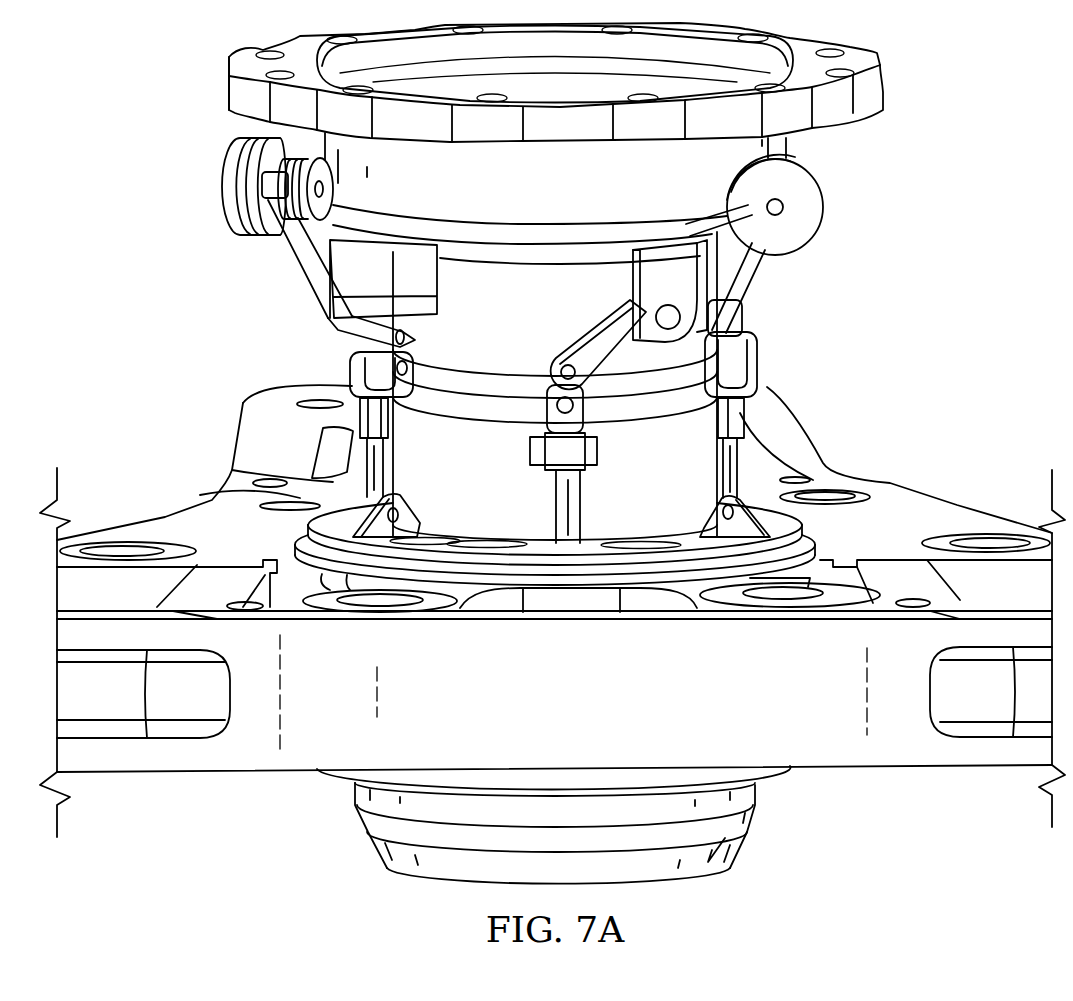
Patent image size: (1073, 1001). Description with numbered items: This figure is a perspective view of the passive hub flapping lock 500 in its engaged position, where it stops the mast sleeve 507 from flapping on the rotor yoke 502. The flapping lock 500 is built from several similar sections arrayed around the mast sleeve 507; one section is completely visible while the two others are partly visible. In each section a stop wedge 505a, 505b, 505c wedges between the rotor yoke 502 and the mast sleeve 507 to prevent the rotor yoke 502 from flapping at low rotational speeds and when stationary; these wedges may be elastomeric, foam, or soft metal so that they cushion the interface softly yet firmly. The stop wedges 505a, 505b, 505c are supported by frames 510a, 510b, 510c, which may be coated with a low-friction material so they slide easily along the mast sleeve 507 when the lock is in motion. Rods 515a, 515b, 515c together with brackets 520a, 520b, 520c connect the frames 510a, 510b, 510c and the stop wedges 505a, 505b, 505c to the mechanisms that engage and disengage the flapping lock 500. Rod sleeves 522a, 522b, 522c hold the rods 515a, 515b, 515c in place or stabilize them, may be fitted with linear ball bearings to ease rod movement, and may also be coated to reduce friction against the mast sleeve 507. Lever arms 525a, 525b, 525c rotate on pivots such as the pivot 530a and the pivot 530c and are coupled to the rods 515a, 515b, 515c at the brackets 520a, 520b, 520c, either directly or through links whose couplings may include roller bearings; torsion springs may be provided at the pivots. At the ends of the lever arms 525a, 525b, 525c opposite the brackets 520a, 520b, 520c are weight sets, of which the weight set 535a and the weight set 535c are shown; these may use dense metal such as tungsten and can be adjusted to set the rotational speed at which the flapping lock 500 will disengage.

The passive hub flapping lock 500 is at (904, 284).
The rotor yoke 502 is at (990, 518).
The stop wedge 505a is at (432, 543).
The stop wedge 505b is at (812, 556).
The stop wedge 505c is at (296, 550).
The mast sleeve 507 is at (489, 356).
The frame 510a is at (480, 540).
The frame 510b is at (790, 478).
The frame 510c is at (362, 514).
The rod 515a is at (580, 496).
The rod 515b is at (745, 448).
The rod 515c is at (360, 458).
The bracket 520a is at (548, 412).
The bracket 520b is at (755, 370).
The bracket 520c is at (347, 372).
The rod sleeve 522a is at (598, 452).
The rod sleeve 522b is at (745, 402).
The rod sleeve 522c is at (360, 402).
The lever arm 525a is at (590, 350).
The lever arm 525b is at (748, 332).
The lever arm 525c is at (300, 270).
The pivot 530a is at (650, 290).
The pivot 530c is at (297, 283).
The weight set 535a is at (815, 212).
The weight set 535c is at (222, 185).